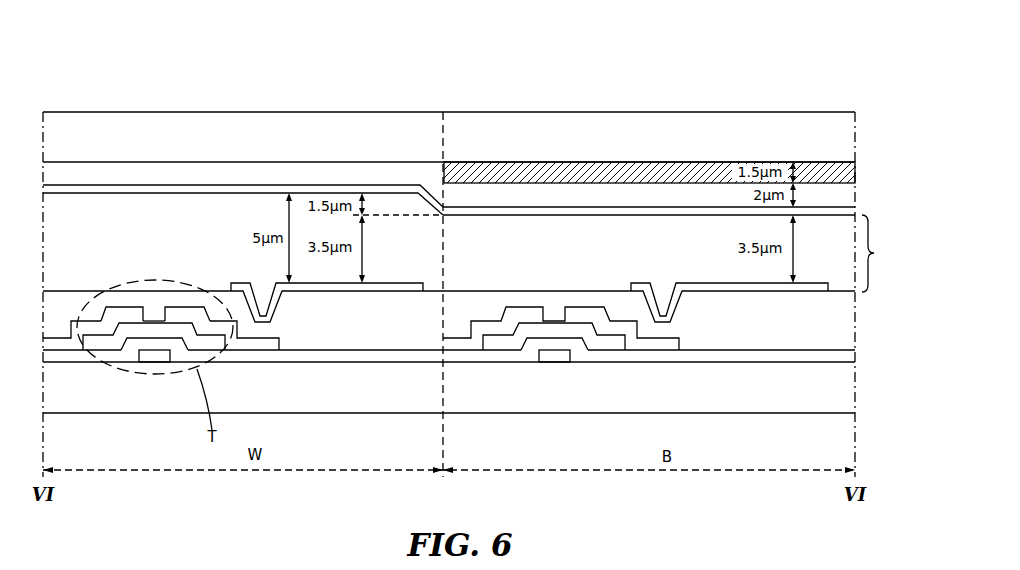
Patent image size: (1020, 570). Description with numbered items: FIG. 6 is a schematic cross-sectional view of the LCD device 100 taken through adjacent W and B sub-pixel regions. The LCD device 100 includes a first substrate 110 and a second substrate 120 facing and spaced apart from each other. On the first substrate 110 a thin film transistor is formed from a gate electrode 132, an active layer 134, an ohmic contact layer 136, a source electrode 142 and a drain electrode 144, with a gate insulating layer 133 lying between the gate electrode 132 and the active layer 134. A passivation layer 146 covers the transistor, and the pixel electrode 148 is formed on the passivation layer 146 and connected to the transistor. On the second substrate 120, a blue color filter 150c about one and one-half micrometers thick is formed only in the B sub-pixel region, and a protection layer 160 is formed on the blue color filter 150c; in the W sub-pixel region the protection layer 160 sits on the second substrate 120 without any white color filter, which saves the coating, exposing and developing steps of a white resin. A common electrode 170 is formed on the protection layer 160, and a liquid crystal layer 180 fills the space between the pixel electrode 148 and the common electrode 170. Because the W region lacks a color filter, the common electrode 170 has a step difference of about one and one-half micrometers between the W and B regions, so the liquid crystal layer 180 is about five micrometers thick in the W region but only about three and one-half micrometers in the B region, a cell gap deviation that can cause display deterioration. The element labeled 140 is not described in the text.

The LCD device 100 is at (631, 97).
The first substrate 110 is at (812, 403).
The second substrate 120 is at (813, 145).
The gate electrode 132 is at (156, 362).
The gate insulating layer 133 is at (350, 363).
The active layer 134 is at (114, 340).
The ohmic contact layer 136 is at (89, 337).
The data line 140 is at (61, 338).
The source electrode 142 is at (130, 307).
The drain electrode 144 is at (177, 307).
The passivation layer 146 is at (506, 300).
The pixel electrode 148 is at (430, 283).
The blue color filter 150c is at (541, 162).
The protection layer 160 is at (372, 185).
The common electrode 170 is at (598, 216).
The liquid crystal layer 180 is at (883, 253).